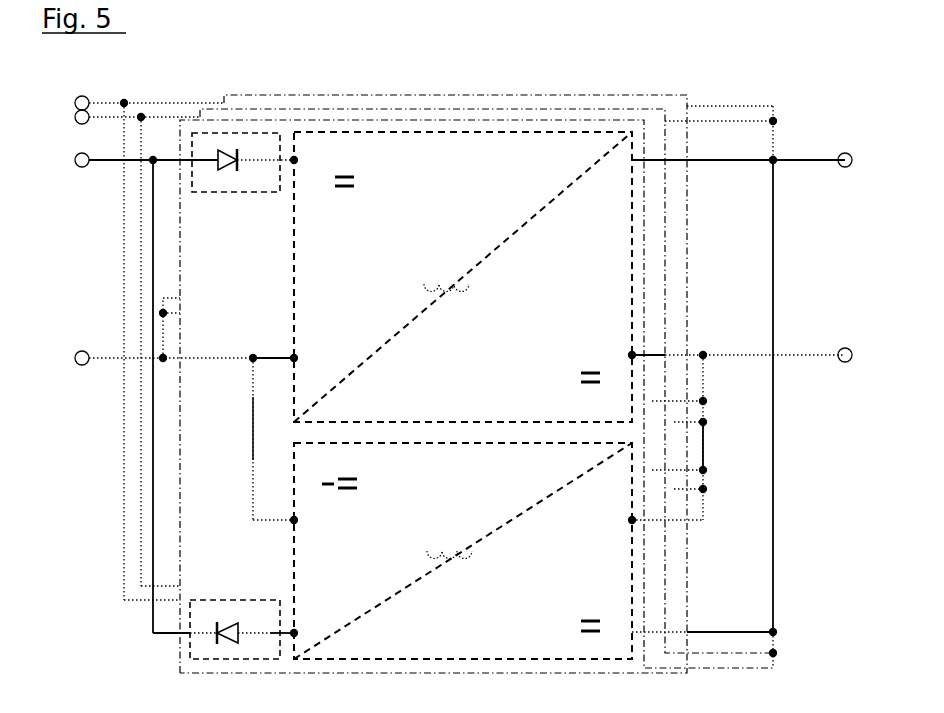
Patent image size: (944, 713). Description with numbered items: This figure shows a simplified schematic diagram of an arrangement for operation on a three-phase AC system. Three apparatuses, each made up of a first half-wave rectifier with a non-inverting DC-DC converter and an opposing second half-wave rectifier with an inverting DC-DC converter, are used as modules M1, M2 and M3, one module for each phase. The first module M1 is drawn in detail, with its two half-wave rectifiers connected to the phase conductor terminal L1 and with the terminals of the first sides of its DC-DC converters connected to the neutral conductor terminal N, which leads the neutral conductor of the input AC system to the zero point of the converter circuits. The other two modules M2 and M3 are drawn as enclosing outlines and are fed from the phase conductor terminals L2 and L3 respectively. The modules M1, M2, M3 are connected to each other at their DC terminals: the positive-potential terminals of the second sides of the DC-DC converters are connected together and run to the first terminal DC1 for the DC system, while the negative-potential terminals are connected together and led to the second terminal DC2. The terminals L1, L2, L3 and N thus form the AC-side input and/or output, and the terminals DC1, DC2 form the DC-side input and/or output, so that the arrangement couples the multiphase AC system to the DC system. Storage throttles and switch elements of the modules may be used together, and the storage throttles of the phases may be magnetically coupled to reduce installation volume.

The phase conductor terminal L1 is at (157, 392).
The phase conductor terminal L2 is at (108, 345).
The phase conductor terminal L3 is at (120, 345).
The neutral conductor terminal N is at (157, 411).
The first terminal for the DC system DC1 is at (769, 387).
The second terminal for the DC system DC2 is at (768, 433).
The first measurement loop M1 is at (400, 116).
The second measurement loop M2 is at (424, 100).
The third measurement loop M3 is at (465, 89).